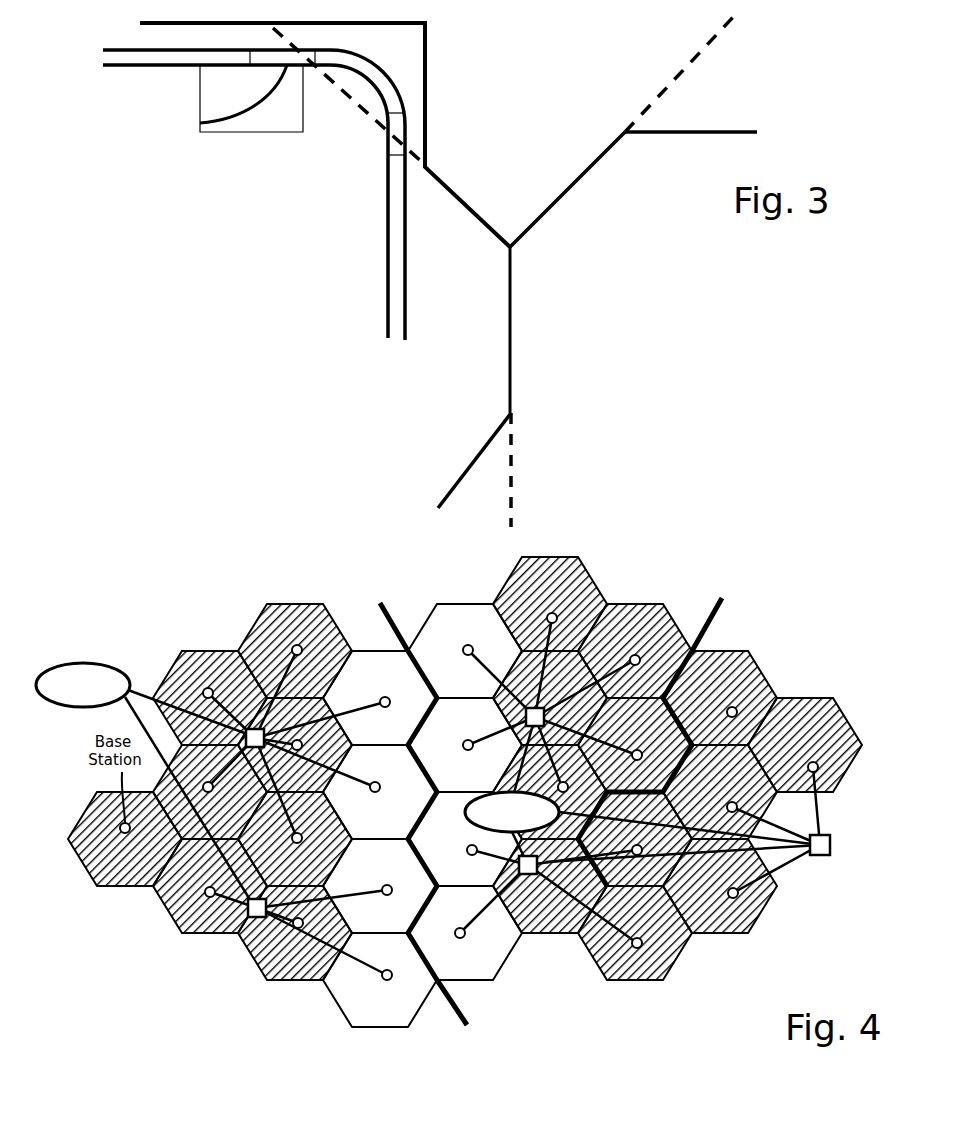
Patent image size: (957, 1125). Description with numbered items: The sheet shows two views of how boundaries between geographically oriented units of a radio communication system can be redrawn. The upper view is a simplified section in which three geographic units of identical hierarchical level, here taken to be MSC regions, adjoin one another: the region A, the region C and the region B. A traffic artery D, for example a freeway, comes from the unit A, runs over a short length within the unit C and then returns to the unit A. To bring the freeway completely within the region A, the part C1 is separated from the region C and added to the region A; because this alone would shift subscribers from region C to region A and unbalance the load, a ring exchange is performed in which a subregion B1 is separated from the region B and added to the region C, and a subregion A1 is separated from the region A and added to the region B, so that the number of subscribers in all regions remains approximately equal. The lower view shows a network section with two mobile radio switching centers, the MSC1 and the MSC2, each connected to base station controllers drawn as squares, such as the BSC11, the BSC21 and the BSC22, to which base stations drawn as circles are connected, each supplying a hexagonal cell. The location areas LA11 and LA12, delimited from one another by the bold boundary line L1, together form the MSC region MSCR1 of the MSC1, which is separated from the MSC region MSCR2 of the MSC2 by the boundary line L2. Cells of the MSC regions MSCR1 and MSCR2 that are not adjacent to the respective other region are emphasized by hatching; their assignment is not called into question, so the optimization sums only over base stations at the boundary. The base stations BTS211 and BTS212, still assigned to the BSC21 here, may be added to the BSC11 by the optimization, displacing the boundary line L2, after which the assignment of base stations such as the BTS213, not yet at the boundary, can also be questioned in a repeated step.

In FIG. 3, the geographic unit A is at (254, 195).
In FIG. 3, the subregion A1 is at (474, 470).
In FIG. 3, the geographic unit B is at (567, 272).
In FIG. 3, the subregion B1 is at (691, 72).
In FIG. 3, the geographic unit C is at (325, 135).
In FIG. 3, the part of region C C1 is at (348, 95).
In FIG. 3, the traffic artery D is at (235, 101).
In FIG. 4, the MSC region MSCR1 is at (665, 749).
In FIG. 4, the MSC region MSCR2 is at (176, 643).
In FIG. 4, the mobile radio switching center MSC1 is at (512, 812).
In FIG. 4, the mobile radio switching center MSC2 is at (148, 468).
In FIG. 4, the location area LA11 is at (629, 590).
In FIG. 4, the location area LA12 is at (808, 686).
In FIG. 4, the boundary line L1 is at (710, 635).
In FIG. 4, the boundary line L2 is at (408, 632).
In FIG. 4, the base station controller BSC11 is at (531, 880).
In FIG. 4, the base station controller BSC21 is at (252, 915).
In FIG. 4, the base station controller BSC22 is at (250, 732).
In FIG. 4, the base station BTS211 is at (387, 981).
In FIG. 4, the base station BTS212 is at (292, 838).
In FIG. 4, the base station BTS213 is at (297, 930).